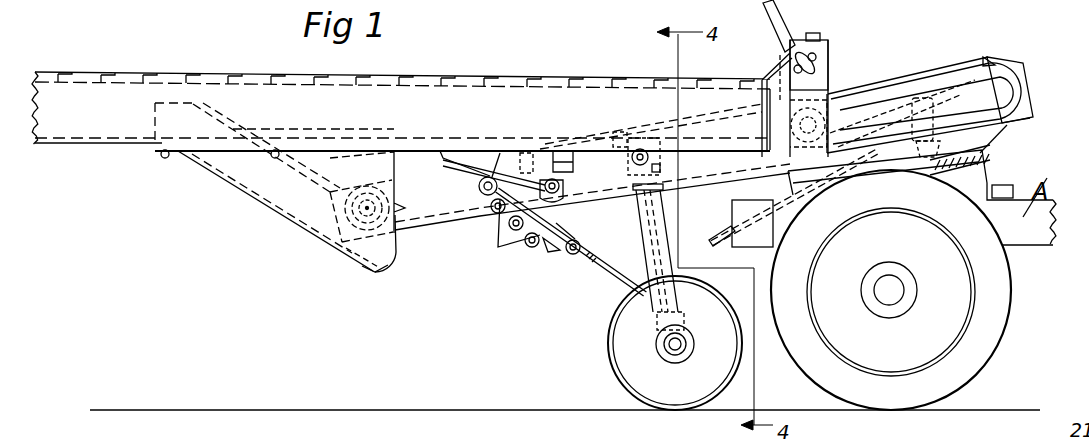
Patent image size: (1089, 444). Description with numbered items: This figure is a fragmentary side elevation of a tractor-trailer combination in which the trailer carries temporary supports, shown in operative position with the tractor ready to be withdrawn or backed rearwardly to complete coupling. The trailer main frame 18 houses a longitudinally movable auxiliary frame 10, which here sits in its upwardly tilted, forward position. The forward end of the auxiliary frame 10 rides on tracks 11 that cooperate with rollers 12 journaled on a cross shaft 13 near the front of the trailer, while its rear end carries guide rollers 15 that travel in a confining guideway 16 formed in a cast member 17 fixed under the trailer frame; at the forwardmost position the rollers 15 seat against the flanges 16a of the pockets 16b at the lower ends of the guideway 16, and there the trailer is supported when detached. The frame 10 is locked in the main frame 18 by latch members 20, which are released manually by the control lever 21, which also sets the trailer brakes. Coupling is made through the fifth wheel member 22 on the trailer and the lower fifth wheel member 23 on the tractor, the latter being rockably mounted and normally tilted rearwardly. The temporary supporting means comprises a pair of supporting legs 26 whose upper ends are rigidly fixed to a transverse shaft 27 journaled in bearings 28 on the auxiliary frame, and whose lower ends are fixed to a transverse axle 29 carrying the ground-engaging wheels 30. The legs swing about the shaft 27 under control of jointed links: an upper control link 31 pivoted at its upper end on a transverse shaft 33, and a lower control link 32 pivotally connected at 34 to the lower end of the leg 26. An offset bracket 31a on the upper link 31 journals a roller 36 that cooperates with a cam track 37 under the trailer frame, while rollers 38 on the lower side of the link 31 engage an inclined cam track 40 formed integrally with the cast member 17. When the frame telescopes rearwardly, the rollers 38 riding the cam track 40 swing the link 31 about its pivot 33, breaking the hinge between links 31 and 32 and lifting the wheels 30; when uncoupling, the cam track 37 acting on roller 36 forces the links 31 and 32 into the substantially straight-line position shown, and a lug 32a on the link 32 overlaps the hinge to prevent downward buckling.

The auxiliary frame 10 is at (440, 214).
The tracks 11 is at (905, 85).
The rollers 12 is at (824, 94).
The cross shaft 13 is at (840, 100).
The guide rollers 15 is at (338, 248).
The guideway 16 is at (262, 191).
The flanges 16a is at (395, 150).
The pockets 16b is at (386, 263).
The cast member 17 is at (312, 226).
The trailer main frame 18 is at (118, 136).
The latch members 20 is at (820, 54).
The control lever 21 is at (782, 33).
The fifth wheel member 22 is at (1017, 108).
The lower fifth wheel member 23 is at (995, 126).
The supporting legs 26 is at (648, 243).
The transverse shaft 27 is at (643, 148).
The bearings 28 is at (607, 140).
The transverse axle 29 is at (672, 350).
The ground-engaging wheels 30 is at (607, 343).
The upper control link 31 is at (552, 250).
The offset bracket 31a is at (552, 212).
The lower control link 32 is at (617, 284).
The lug 32a is at (578, 241).
The transverse shaft 33 is at (481, 214).
The pivot connection 34 is at (684, 316).
The roller 36 is at (563, 185).
The cam track 37 is at (515, 172).
The rollers 38 is at (514, 236).
The inclined cam track 40 is at (363, 138).